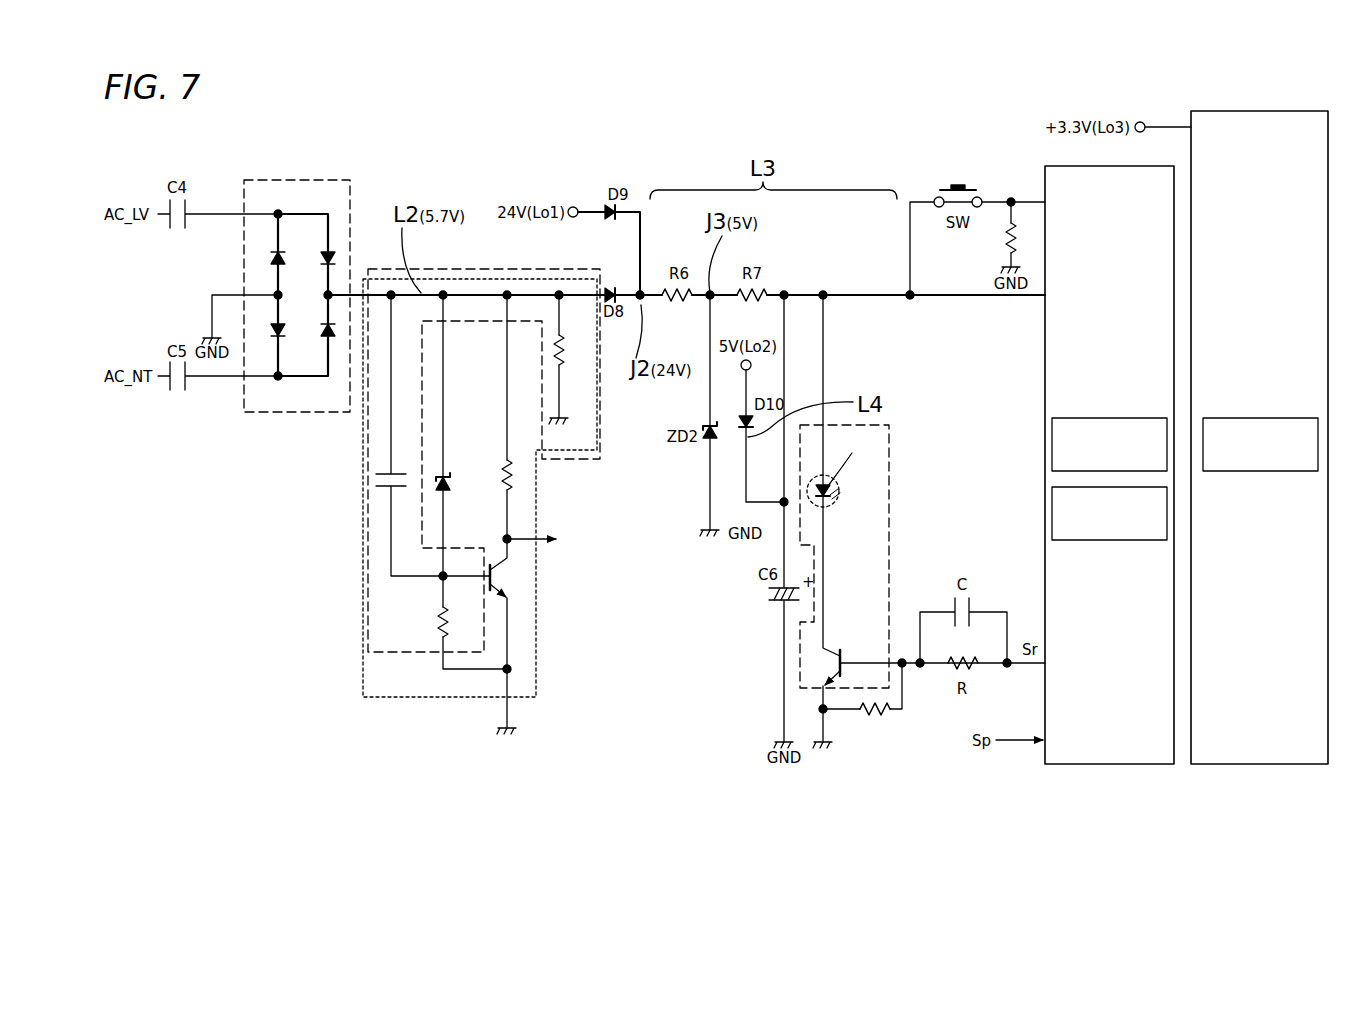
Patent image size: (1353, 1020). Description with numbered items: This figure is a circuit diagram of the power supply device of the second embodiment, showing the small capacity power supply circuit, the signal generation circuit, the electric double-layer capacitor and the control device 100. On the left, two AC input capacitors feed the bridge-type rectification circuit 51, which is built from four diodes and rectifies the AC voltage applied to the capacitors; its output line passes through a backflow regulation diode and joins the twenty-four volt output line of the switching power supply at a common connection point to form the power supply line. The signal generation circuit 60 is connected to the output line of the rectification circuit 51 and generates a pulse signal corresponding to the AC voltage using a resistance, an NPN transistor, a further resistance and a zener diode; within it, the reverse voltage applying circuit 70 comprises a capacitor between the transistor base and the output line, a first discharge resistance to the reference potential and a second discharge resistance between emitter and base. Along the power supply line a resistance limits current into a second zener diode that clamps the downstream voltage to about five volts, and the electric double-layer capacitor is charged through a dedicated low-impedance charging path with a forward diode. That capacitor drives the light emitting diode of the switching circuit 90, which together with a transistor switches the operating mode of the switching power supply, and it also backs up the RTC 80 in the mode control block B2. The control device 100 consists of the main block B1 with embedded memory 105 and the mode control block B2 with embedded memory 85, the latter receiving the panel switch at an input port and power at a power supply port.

The rectification circuit 51 is at (318, 180).
The signal generation circuit 60 is at (455, 698).
The reverse voltage applying circuit 70 is at (400, 653).
The RTC 80 is at (1052, 509).
The memory 85 is at (1052, 446).
The switching circuit 90 is at (889, 485).
The control device 100 is at (1250, 803).
The memory 105 is at (1288, 425).
The main block B1 is at (1242, 752).
The mode control block B2 is at (1140, 752).